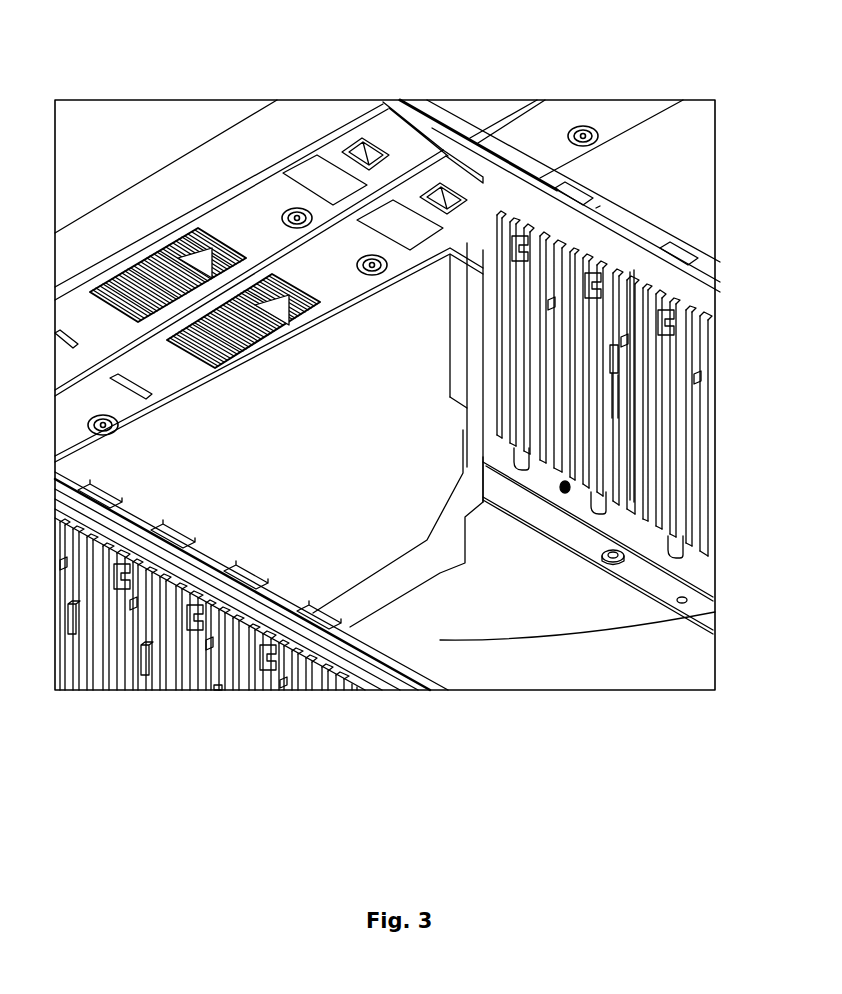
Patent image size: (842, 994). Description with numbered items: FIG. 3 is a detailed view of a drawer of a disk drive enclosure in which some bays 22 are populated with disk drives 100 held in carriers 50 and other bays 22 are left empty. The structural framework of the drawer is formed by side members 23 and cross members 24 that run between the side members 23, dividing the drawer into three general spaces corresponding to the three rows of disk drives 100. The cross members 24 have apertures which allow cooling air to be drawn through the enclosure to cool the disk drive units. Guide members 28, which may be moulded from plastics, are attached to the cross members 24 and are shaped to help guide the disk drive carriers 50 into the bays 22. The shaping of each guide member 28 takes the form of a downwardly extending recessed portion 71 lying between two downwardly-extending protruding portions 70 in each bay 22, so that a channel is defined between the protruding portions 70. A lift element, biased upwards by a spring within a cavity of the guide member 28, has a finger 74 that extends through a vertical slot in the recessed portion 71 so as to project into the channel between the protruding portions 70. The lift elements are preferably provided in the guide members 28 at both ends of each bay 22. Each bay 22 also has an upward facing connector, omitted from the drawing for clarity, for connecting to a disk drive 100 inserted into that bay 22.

The disk drive 100 is at (300, 455).
The side member 23 is at (297, 120).
The carrier 50 is at (158, 363).
The cross member 24 is at (425, 118).
The bay 22 is at (592, 198).
The protruding portion 70 is at (603, 257).
The recessed portion 71 is at (633, 267).
The finger 74 is at (617, 374).
The guide member 28 is at (693, 517).